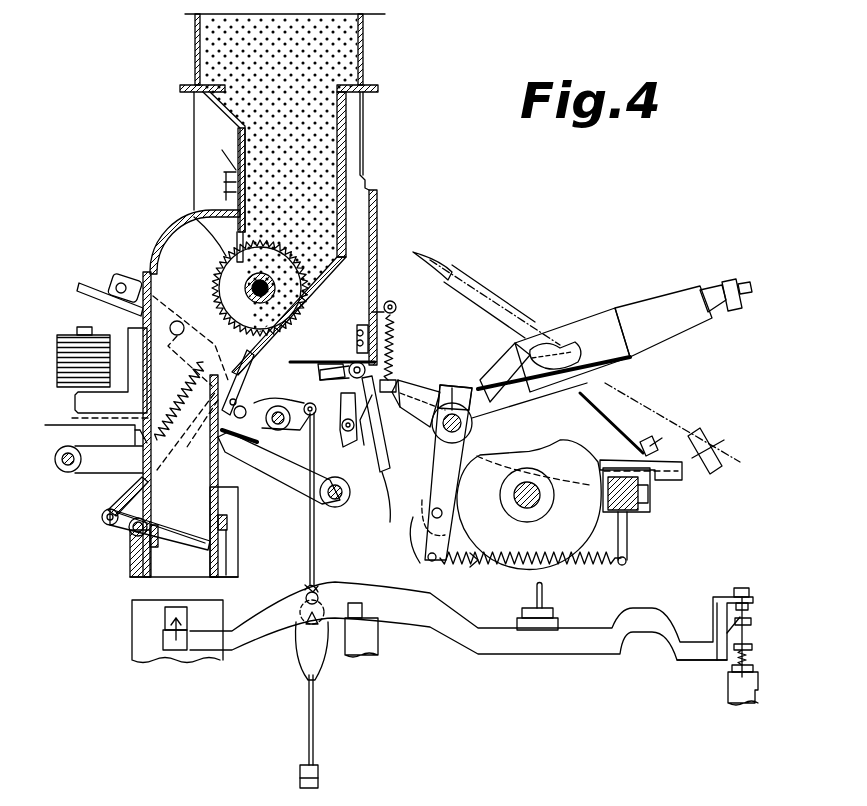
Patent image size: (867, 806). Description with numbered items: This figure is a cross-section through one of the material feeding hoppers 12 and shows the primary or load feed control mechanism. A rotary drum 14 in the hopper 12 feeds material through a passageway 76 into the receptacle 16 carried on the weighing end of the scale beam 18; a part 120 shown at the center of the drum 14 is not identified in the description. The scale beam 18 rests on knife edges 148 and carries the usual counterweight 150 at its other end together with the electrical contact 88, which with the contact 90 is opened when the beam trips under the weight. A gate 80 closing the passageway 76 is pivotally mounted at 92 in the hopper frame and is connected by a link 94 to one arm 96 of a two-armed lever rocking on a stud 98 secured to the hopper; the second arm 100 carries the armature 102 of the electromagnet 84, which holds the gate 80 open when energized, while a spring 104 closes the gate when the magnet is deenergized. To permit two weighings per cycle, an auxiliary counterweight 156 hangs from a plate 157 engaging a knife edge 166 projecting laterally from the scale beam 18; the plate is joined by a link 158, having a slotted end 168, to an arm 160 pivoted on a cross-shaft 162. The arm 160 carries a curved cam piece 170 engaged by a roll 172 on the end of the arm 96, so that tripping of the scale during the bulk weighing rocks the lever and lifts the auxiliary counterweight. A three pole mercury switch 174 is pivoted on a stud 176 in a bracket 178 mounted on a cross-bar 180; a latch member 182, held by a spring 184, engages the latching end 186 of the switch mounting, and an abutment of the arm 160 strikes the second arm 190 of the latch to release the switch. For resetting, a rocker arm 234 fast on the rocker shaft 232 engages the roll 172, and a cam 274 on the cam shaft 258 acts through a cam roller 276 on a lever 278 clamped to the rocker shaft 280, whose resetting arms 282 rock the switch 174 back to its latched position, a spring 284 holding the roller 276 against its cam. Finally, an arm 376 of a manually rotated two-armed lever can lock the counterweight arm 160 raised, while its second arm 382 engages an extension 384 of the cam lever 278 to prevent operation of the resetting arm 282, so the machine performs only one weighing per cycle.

The material feeding hopper 12 is at (90, 192).
The rotary drum 14 is at (222, 254).
The receptacle 16 is at (132, 638).
The scale beam 18 is at (478, 656).
The passageway 76 is at (132, 556).
The gate 80 is at (182, 520).
The electromagnet 84 is at (70, 338).
The electrical contact 88 is at (750, 620).
The contact 90 is at (748, 632).
The pivot 92 is at (128, 532).
The link 94 is at (128, 492).
The arm 96 is at (260, 290).
The stud 98 is at (178, 320).
The second arm 100 is at (133, 286).
The armature 102 is at (96, 286).
The spring 104 is at (93, 428).
The wheel hub shaft 120 is at (268, 272).
The knife edges 148 is at (362, 658).
The counterweight 150 is at (542, 616).
The auxiliary counterweight 156 is at (302, 766).
The plate 157 is at (296, 656).
The link 158 is at (327, 568).
The arm 160 is at (346, 438).
The cross-shaft 162 is at (286, 432).
The knife edge 166 is at (300, 620).
The slotted end 168 is at (306, 590).
The curved cam piece 170 is at (330, 366).
The roll 172 is at (247, 402).
The three pole mercury switch 174 is at (604, 308).
The stud 176 is at (545, 338).
The bracket 178 is at (605, 428).
The cross-bar 180 is at (636, 507).
The latch member 182 is at (382, 470).
The spring 184 is at (392, 322).
The latching end 186 is at (440, 400).
The second arm 190 is at (322, 358).
The rocker shaft 232 is at (310, 512).
The rocker arm 234 is at (262, 470).
The cam shaft 258 is at (536, 500).
The cam 274 is at (538, 560).
The cam roller 276 is at (452, 512).
The cam lever 278 is at (445, 480).
The rocker shaft 280 is at (478, 398).
The resetting arm 282 is at (672, 478).
The spring 284 is at (478, 562).
The arm 376 is at (341, 509).
The second arm 382 is at (388, 522).
The extension 384 is at (433, 384).